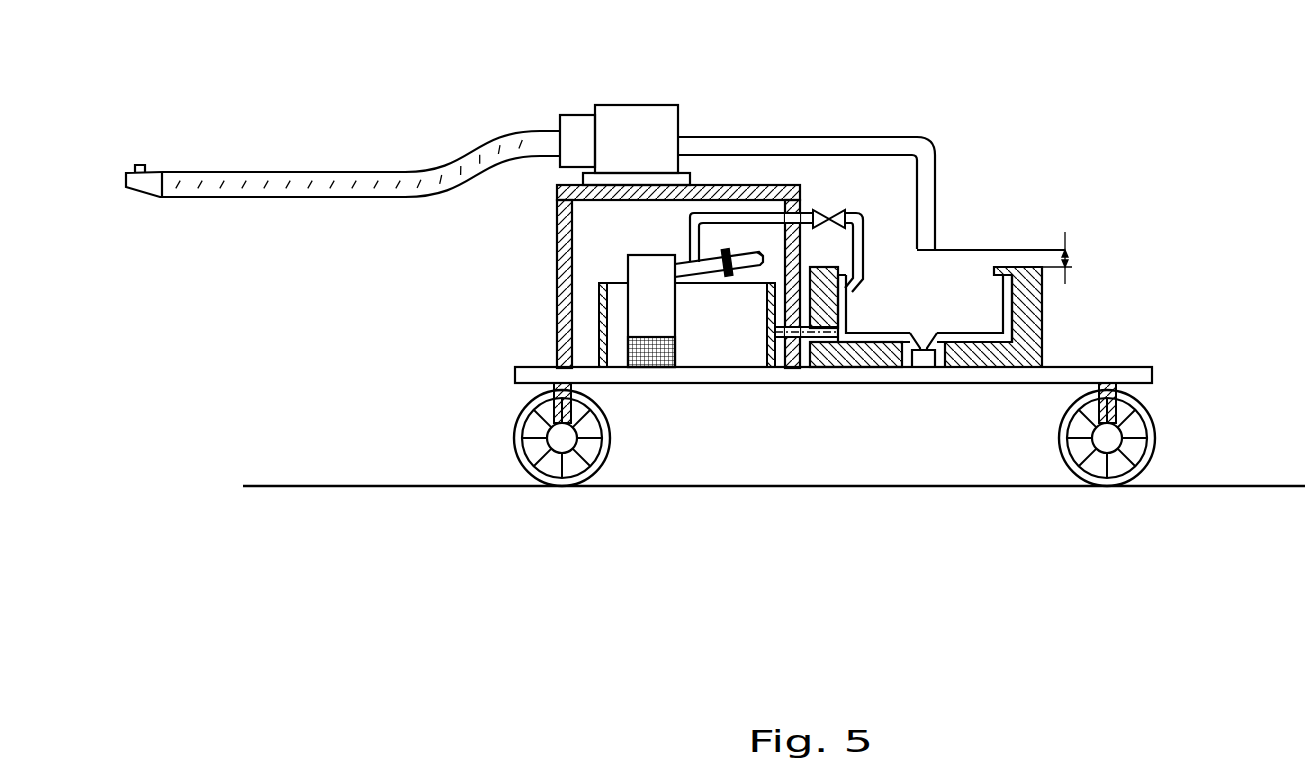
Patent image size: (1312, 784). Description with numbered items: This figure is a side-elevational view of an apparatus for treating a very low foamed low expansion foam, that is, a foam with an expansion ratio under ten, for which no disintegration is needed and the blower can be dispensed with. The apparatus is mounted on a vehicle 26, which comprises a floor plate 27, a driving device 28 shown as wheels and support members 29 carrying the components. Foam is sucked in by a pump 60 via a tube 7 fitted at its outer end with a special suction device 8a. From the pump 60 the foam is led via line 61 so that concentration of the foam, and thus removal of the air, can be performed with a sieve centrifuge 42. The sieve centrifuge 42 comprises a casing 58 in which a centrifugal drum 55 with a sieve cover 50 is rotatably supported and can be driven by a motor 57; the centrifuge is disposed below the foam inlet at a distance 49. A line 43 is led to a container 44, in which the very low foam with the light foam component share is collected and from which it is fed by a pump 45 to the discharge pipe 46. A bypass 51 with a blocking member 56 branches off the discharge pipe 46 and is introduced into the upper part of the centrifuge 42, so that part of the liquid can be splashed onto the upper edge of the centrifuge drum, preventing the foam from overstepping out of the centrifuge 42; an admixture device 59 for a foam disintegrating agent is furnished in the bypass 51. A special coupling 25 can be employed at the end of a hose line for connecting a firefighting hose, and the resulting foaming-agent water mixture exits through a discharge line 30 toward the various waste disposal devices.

The tube 7 is at (298, 180).
The special suction device 8a is at (147, 187).
The special coupling 25 is at (730, 276).
The vehicle 26 is at (448, 447).
The floor plate 27 is at (1135, 378).
The driving device 28 is at (560, 487).
The support members 29 is at (557, 282).
The discharge line 30 is at (756, 261).
The sieve centrifuge 42 is at (1198, 260).
The line 43 is at (802, 338).
The container 44 is at (744, 353).
The pump 45 is at (646, 330).
The discharge pipe 46 is at (706, 268).
The distance 49 is at (1070, 257).
The sieve cover 50 is at (853, 322).
The bypass 51 is at (692, 222).
The centrifugal drum 55 is at (1010, 298).
The blocking member 56 is at (829, 228).
The motor 57 is at (927, 360).
The casing 58 is at (1037, 355).
The admixture device 59 is at (688, 243).
The pump 60 is at (622, 125).
The line 61 is at (803, 142).